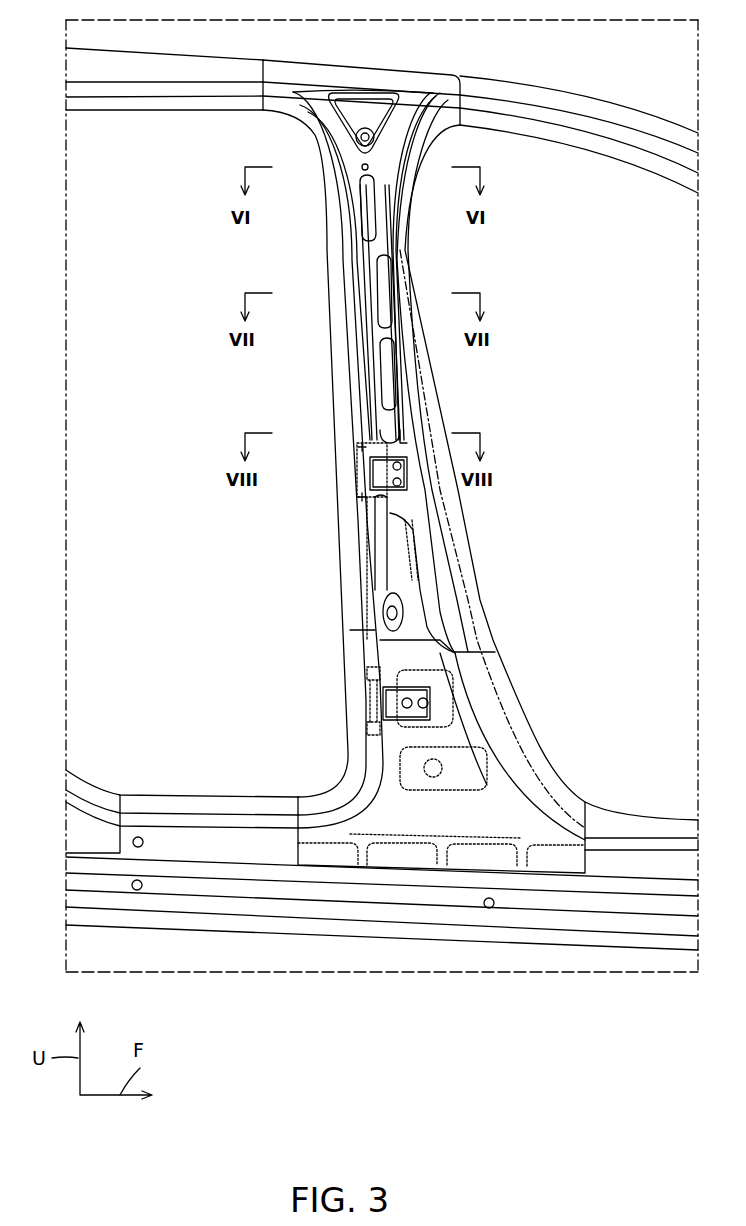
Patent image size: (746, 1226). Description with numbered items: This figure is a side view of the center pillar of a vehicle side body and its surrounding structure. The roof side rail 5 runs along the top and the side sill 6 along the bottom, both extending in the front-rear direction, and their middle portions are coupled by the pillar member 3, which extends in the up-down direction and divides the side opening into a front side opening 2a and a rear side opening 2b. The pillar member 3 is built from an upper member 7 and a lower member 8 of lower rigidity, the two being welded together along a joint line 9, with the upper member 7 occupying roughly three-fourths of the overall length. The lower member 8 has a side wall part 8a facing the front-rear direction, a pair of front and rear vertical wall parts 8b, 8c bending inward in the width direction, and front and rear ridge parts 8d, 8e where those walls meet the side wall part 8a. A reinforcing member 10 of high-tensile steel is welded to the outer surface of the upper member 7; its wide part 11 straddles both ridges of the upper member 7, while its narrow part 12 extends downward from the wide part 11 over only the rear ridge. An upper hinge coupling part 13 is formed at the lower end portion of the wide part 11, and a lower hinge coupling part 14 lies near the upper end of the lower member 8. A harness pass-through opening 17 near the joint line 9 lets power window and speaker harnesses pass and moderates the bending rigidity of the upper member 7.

The front side opening 2a is at (635, 378).
The rear side opening 2b is at (185, 378).
The pillar member 3 is at (458, 406).
The roof side rail 5 is at (160, 88).
The side sill 6 is at (178, 893).
The upper member 7 is at (481, 532).
The lower member 8 is at (521, 699).
The side wall part 8a is at (427, 810).
The front vertical wall part 8b is at (503, 757).
The rear vertical wall part 8c is at (367, 783).
The front ridge part 8d is at (527, 820).
The rear ridge part 8e is at (353, 818).
The joint line 9 is at (467, 647).
The reinforcing member 10 is at (421, 387).
The wide part 11 is at (367, 367).
The narrow part 12 is at (377, 537).
The upper hinge coupling part 13 is at (350, 482).
The lower hinge coupling part 14 is at (361, 688).
The harness pass-through opening 17 is at (383, 613).